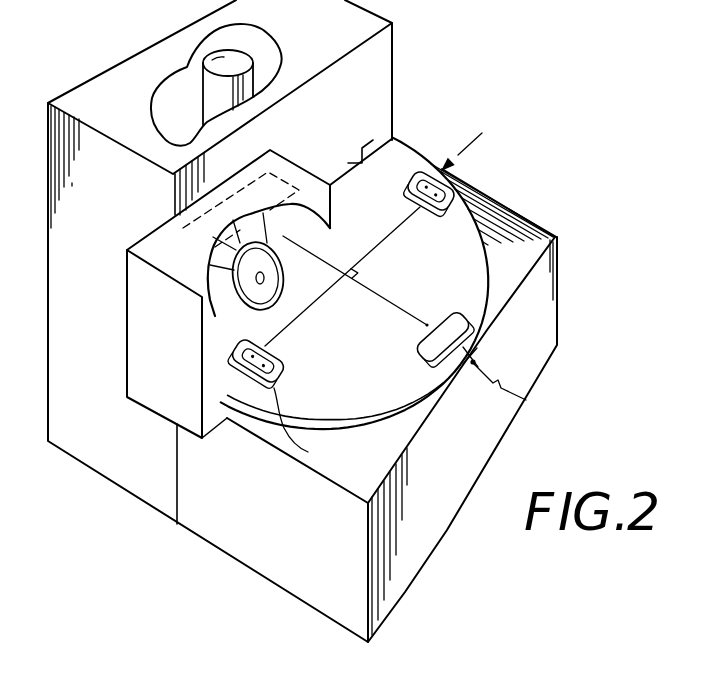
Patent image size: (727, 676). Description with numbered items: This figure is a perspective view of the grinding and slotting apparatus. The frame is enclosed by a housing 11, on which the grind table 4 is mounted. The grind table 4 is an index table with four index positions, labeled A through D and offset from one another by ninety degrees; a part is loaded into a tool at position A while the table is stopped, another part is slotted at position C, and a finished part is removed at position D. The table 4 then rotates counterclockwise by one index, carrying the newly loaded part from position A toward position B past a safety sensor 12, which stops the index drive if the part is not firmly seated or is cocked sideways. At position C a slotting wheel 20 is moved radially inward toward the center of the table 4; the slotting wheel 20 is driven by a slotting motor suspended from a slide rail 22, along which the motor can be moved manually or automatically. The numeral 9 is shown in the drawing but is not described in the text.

The grind table 4 is at (418, 167).
The positioning hole with cylinder 9 is at (183, 67).
The housing 11 is at (220, 533).
The safety sensor 12 is at (363, 137).
The slotting wheel 20 is at (264, 290).
The slide rail 22 is at (178, 240).